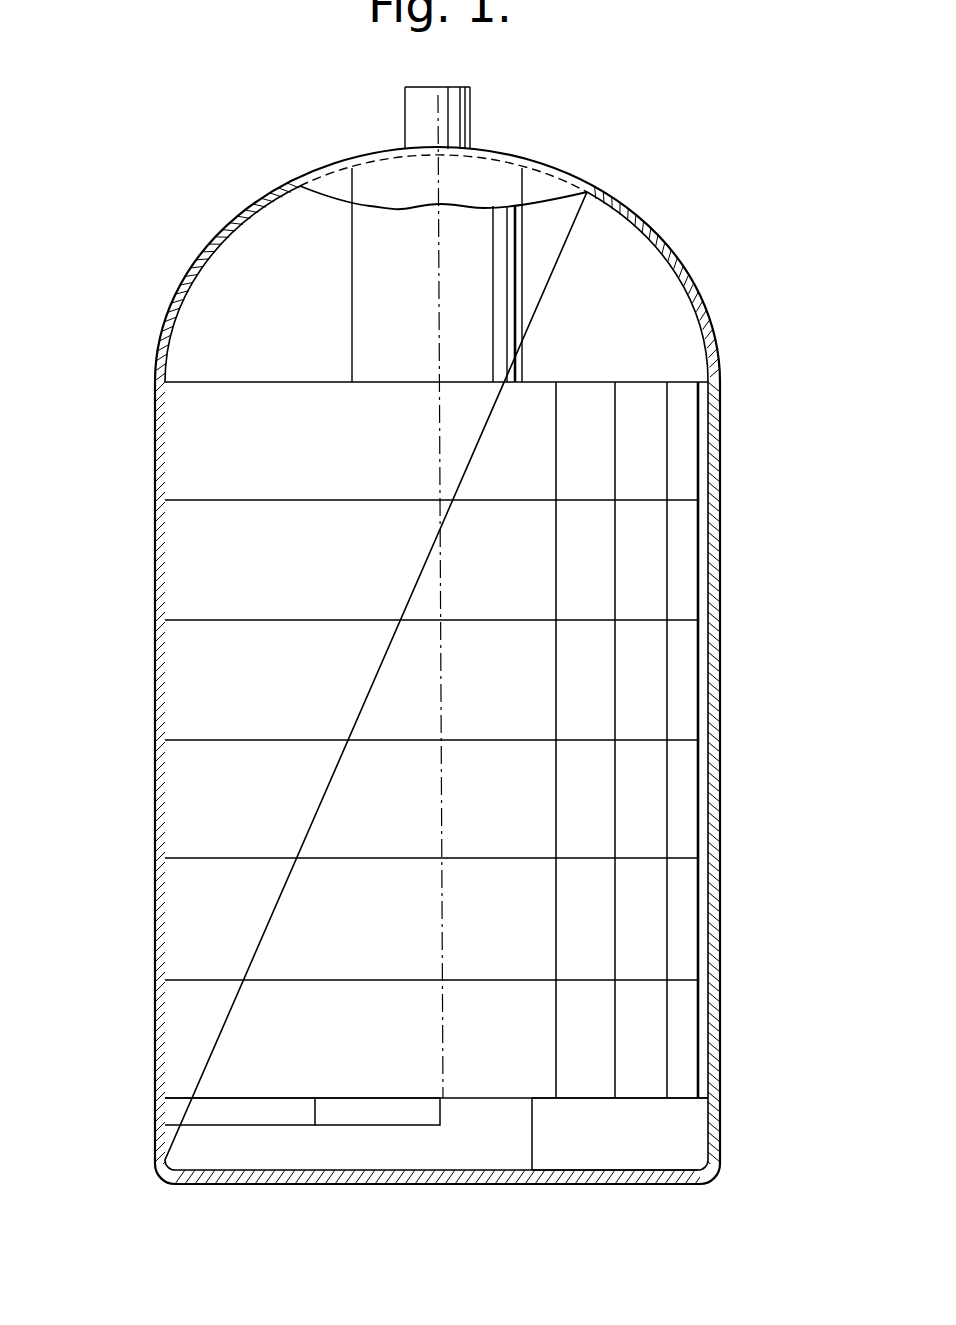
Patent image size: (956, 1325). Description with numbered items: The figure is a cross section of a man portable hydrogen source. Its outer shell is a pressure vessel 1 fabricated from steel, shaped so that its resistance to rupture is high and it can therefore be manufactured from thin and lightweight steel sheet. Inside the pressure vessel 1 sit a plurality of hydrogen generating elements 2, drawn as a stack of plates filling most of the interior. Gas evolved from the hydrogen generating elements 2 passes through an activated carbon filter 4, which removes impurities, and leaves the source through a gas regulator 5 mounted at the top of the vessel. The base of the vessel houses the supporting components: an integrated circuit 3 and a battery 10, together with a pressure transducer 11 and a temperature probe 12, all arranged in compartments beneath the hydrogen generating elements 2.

The pressure vessel 1 is at (190, 265).
The hydrogen generating elements 2 is at (683, 458).
The integrated circuit 3 is at (468, 1152).
The activated carbon filter 4 is at (465, 227).
The gas regulator 5 is at (420, 123).
The battery 10 is at (622, 1130).
The pressure transducer 11 is at (198, 1113).
The temperature probe 12 is at (378, 1113).